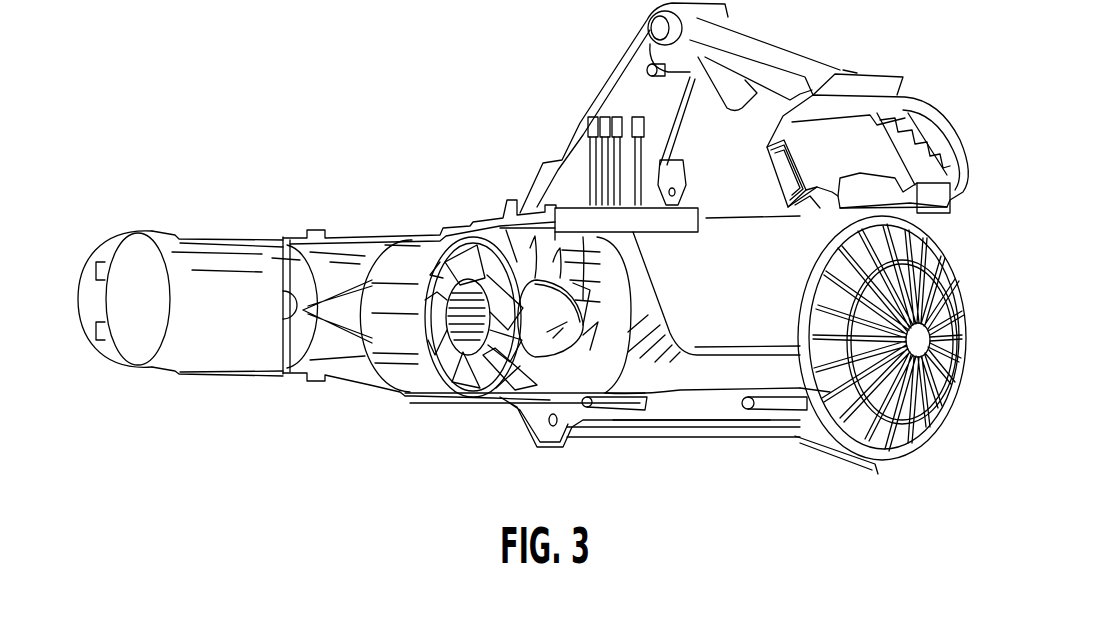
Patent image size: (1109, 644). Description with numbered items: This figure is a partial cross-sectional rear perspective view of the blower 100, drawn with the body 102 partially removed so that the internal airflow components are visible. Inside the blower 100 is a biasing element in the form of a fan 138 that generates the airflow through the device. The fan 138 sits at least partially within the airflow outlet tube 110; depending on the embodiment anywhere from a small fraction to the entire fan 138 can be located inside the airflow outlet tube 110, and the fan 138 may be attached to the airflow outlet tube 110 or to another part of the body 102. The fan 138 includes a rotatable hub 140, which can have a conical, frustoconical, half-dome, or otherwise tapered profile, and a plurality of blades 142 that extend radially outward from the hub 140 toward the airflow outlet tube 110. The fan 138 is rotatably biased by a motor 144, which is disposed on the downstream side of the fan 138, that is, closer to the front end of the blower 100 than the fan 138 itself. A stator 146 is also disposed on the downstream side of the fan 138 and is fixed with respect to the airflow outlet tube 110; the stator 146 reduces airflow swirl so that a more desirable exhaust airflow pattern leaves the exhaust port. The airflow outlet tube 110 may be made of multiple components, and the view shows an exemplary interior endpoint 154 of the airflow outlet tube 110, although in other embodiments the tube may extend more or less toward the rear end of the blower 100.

The blower 100 is at (326, 130).
The body 102 is at (190, 372).
The airflow outlet tube 110 is at (258, 240).
The fan 138 is at (518, 377).
The hub 140 is at (562, 332).
The blades 142 is at (515, 258).
The motor 144 is at (455, 370).
The stator 146 is at (405, 384).
The interior endpoint 154 is at (641, 380).